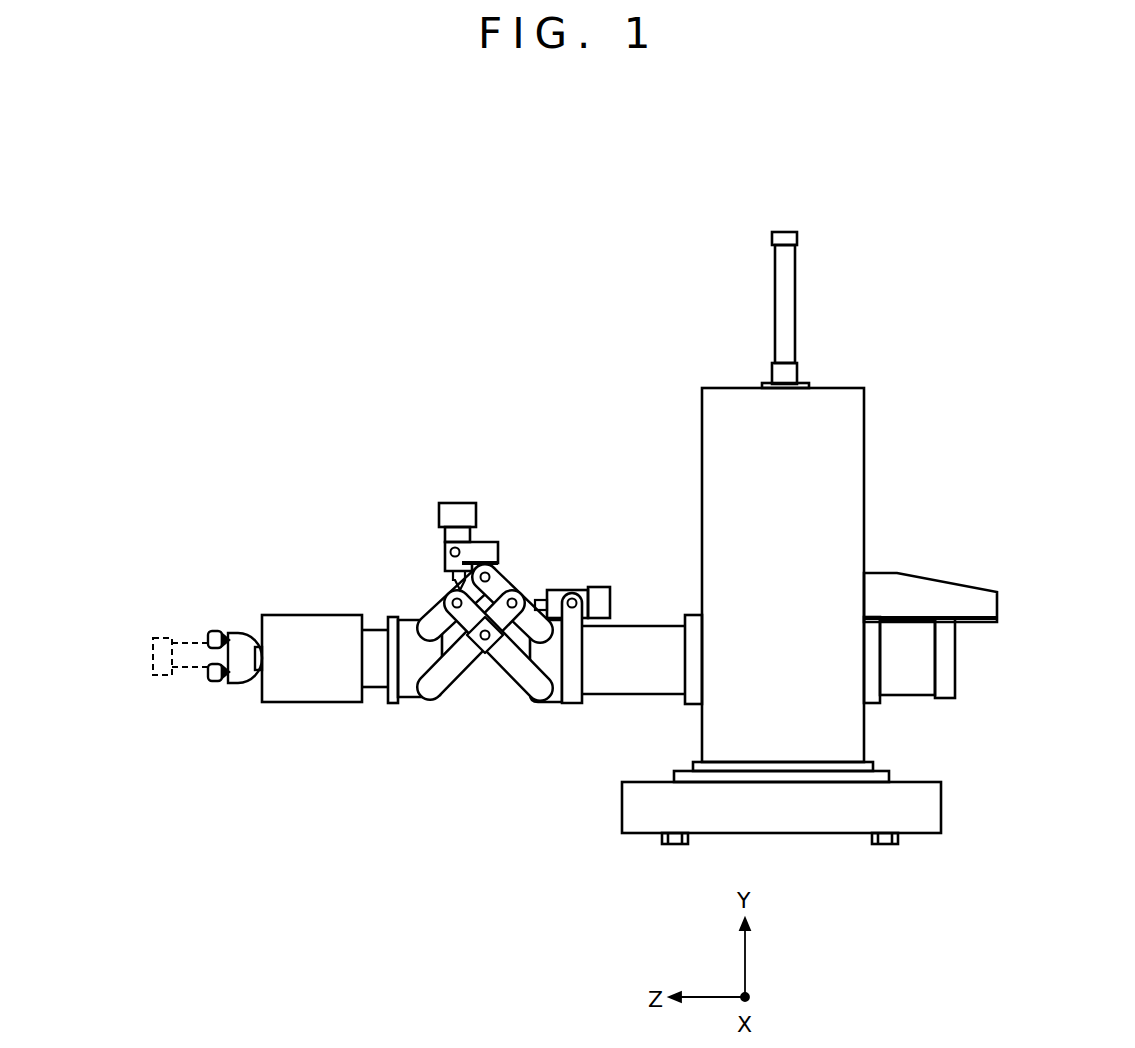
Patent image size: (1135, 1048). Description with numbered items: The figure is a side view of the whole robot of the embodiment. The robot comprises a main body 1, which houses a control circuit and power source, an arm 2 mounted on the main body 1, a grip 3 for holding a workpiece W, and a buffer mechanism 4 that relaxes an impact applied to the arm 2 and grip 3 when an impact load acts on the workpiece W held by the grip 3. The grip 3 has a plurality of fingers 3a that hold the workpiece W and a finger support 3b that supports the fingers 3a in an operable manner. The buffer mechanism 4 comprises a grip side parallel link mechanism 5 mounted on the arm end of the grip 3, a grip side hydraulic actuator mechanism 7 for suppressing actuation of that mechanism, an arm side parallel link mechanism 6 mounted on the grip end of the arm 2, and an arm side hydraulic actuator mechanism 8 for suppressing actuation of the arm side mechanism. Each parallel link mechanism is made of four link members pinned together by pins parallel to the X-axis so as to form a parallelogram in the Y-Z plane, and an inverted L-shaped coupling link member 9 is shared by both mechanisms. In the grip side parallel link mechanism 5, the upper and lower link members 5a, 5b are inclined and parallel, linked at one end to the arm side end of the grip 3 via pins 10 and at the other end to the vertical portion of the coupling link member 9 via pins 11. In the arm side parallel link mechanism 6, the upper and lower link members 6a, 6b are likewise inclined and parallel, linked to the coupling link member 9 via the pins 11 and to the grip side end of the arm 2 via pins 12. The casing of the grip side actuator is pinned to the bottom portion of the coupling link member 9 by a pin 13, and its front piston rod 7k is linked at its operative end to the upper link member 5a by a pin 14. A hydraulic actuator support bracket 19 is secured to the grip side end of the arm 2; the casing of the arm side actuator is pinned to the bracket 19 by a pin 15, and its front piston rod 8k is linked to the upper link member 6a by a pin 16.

The main body 1 is at (832, 392).
The arm 2 is at (634, 642).
The grip 3 is at (285, 716).
The fingers 3a is at (210, 683).
The finger support 3b is at (325, 692).
The buffer mechanism 4 is at (492, 644).
The grip side parallel link mechanism 5 is at (453, 621).
The upper link member 5a is at (433, 613).
The lower link member 5b is at (465, 663).
The arm side parallel link mechanism 6 is at (498, 680).
The upper link member 6a is at (505, 592).
The lower link member 6b is at (513, 663).
The grip side hydraulic actuator mechanism 7 is at (452, 510).
The front piston rod 7k is at (449, 568).
The arm side hydraulic actuator mechanism 8 is at (598, 590).
The front piston rod 8k is at (539, 600).
The coupling link member 9 is at (478, 541).
The pins 10 is at (409, 700).
The pins 11 is at (489, 571).
The pins 12 is at (541, 695).
The pin 13 is at (451, 546).
The pin 14 is at (452, 601).
The pin 15 is at (574, 610).
The pin 16 is at (516, 600).
The hydraulic actuator support bracket 19 is at (577, 667).
The workpiece W is at (164, 637).